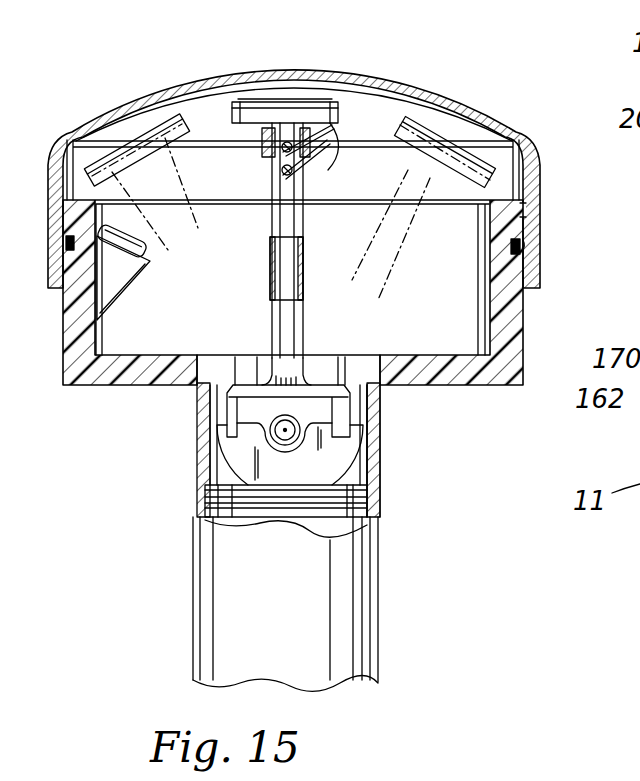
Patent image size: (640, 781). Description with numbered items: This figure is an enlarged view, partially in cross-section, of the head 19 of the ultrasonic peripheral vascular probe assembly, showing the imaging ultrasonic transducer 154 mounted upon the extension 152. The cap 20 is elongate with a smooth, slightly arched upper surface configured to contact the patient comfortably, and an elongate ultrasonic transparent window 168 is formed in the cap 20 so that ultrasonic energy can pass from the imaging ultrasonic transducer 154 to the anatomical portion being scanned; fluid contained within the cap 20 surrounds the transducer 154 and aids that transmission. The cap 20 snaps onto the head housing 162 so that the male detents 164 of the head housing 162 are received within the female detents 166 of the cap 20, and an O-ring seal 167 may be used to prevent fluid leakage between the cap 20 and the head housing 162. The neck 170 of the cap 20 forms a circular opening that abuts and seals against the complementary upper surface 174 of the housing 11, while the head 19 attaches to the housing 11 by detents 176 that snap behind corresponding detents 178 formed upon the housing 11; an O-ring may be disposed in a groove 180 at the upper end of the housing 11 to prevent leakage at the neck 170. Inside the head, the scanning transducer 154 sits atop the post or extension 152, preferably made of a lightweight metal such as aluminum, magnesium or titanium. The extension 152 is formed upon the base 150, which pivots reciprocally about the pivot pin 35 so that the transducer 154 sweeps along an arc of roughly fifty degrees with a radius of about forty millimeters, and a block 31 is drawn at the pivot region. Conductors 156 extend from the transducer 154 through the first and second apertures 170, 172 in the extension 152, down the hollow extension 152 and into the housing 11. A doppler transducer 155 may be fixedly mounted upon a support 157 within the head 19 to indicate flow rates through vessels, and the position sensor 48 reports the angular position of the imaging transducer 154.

The housing 11 is at (360, 645).
The head 19 is at (380, 72).
The cap 20 is at (437, 97).
The mounting block 31 is at (233, 413).
The pivot pin 35 is at (285, 437).
The position sensor 48 is at (380, 462).
The base 150 is at (323, 387).
The extension 152 is at (298, 220).
The imaging ultrasonic transducer 154 is at (168, 110).
The doppler transducer 155 is at (170, 247).
The conductors 156 is at (322, 150).
The support 157 is at (137, 273).
The head housing 162 is at (522, 330).
The male detents 164 is at (530, 212).
The female detents 166 is at (520, 215).
The O-ring seal 167 is at (515, 244).
The ultrasonic transparent window 168 is at (270, 75).
The neck 170 is at (267, 156).
The second aperture 172 is at (283, 172).
The upper surface 174 is at (223, 487).
The detents 176 is at (210, 523).
The detents 178 is at (308, 510).
The groove 180 is at (207, 506).